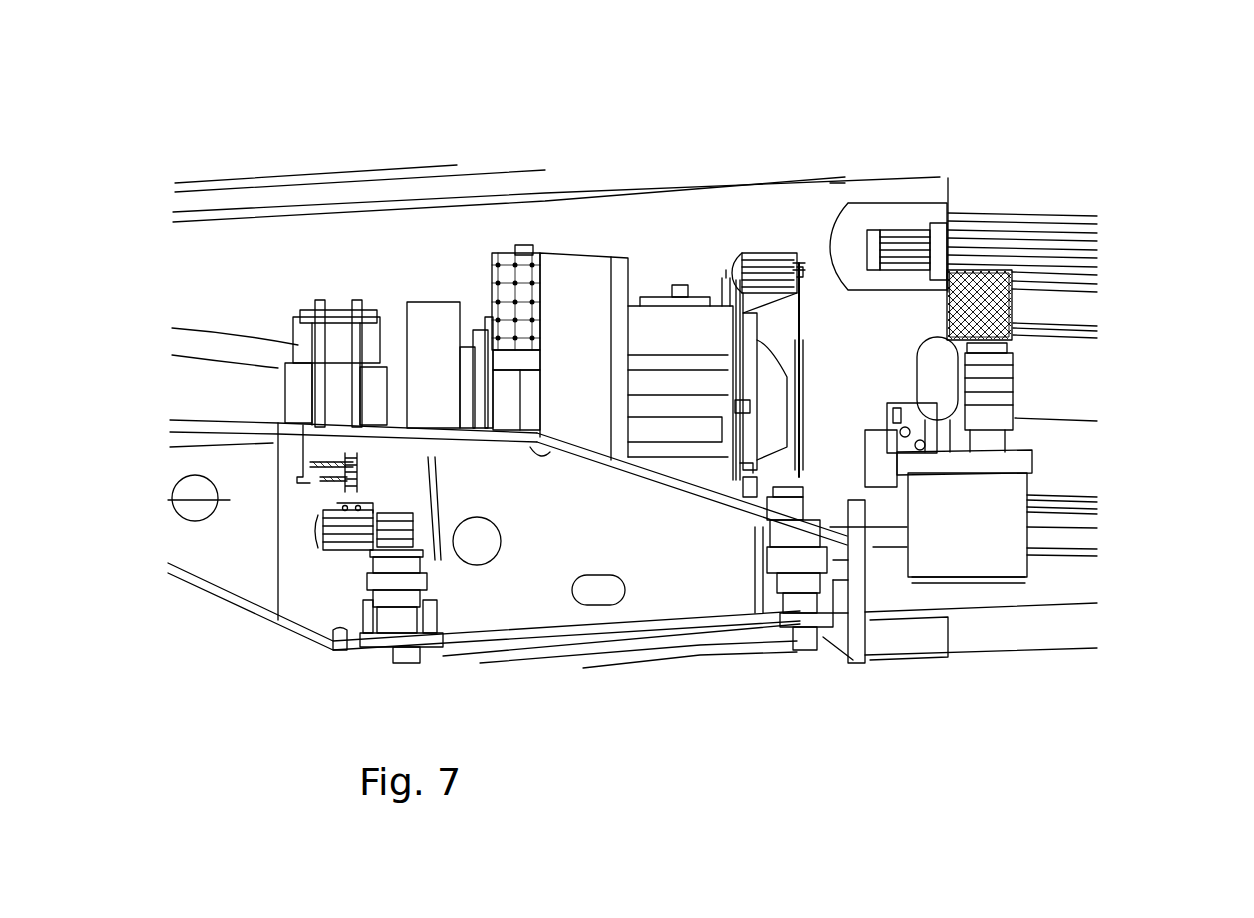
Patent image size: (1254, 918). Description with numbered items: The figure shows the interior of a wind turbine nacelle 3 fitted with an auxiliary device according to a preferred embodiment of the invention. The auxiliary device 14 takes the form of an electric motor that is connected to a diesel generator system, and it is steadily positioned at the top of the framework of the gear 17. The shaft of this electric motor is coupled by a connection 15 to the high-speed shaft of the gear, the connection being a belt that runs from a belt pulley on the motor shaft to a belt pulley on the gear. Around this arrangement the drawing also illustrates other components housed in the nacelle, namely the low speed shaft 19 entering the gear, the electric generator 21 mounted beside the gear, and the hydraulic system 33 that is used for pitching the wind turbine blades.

The wind turbine nacelle 3 is at (1113, 151).
The auxiliary device 14 is at (752, 253).
The connection 15 is at (793, 400).
The gear 17 is at (648, 322).
The low speed shaft 19 is at (220, 348).
The electric generator 21 is at (950, 213).
The hydraulic system 33 is at (1013, 392).